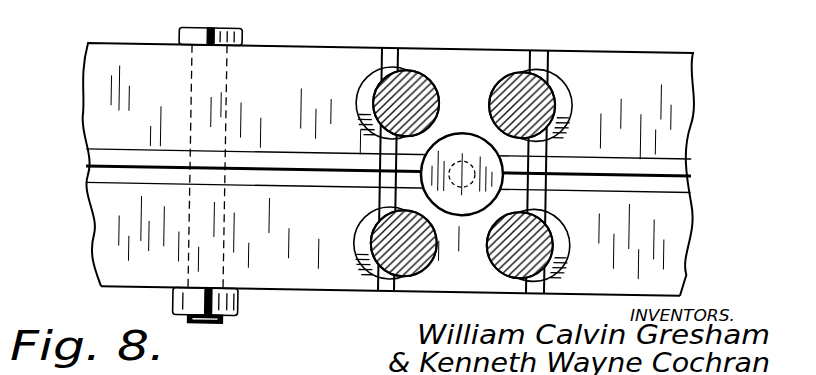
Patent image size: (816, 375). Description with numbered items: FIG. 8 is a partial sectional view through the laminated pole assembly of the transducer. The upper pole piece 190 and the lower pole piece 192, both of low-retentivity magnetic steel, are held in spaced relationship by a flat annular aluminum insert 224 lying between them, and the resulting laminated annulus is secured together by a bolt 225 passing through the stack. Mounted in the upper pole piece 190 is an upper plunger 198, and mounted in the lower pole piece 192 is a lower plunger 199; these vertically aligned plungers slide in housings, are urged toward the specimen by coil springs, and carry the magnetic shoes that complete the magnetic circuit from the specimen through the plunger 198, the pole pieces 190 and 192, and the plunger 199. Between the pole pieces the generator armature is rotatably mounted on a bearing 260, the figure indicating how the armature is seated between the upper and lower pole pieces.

The upper pole piece 190 is at (287, 80).
The lower pole piece 192 is at (286, 300).
The upper plunger 198 is at (508, 93).
The lower plunger 199 is at (510, 256).
The flat annular aluminum insert 224 is at (292, 177).
The bolt 225 is at (190, 38).
The bearing 260 is at (462, 160).